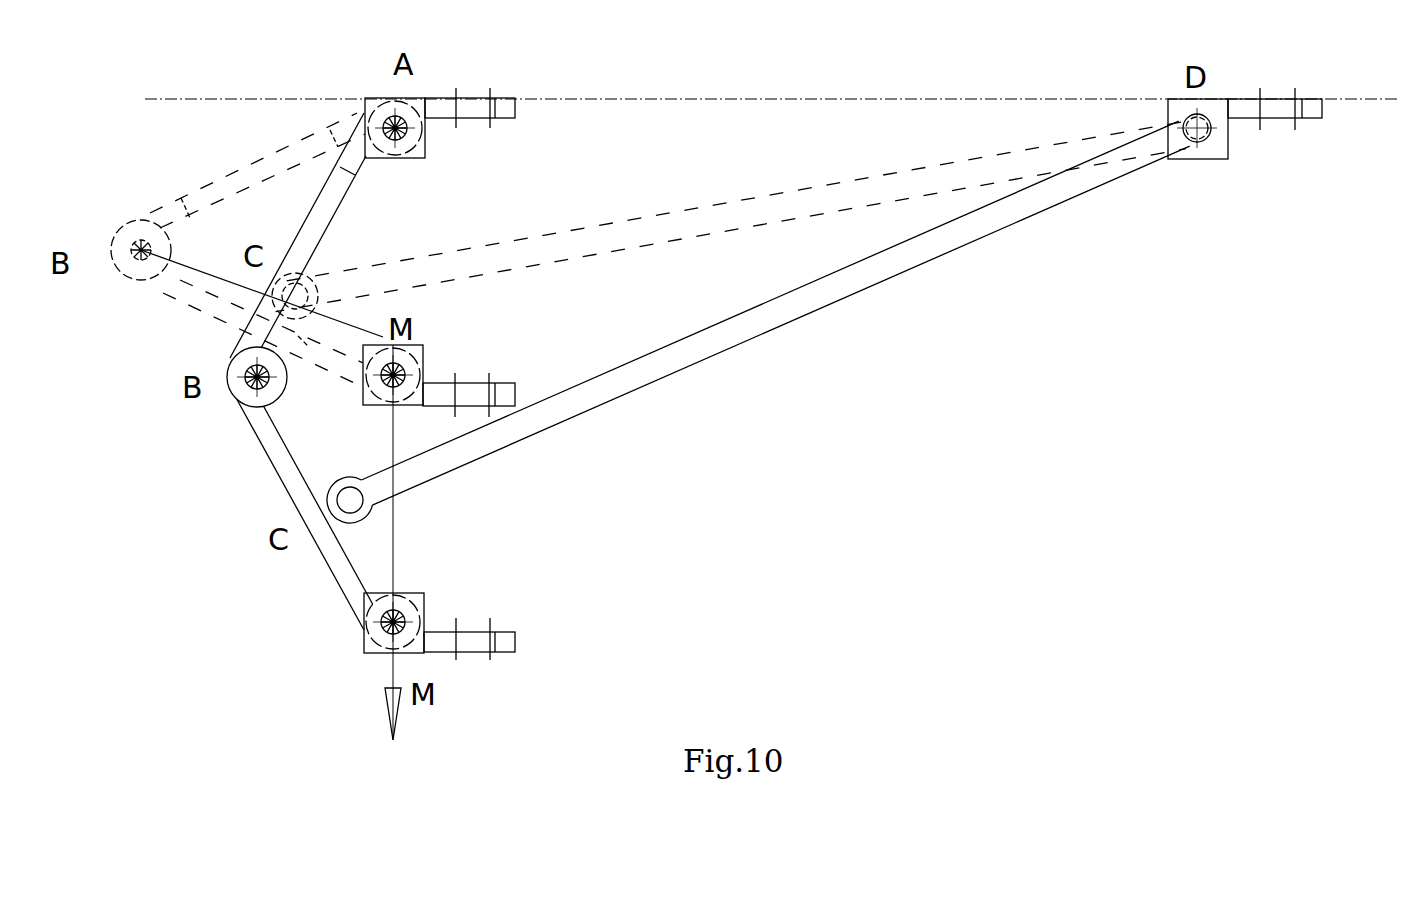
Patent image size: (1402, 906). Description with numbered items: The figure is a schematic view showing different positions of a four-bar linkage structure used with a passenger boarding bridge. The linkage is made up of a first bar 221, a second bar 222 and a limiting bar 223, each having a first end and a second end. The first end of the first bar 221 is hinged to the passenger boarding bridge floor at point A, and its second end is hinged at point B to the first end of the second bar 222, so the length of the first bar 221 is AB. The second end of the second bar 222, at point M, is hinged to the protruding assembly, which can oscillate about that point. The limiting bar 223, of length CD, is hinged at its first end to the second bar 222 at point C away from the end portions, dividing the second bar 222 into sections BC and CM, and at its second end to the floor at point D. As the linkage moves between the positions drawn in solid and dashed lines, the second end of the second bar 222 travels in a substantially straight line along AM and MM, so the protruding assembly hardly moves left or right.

The first bar 221 is at (315, 232).
The second bar 222 is at (295, 482).
The limiting bar 223 is at (580, 398).